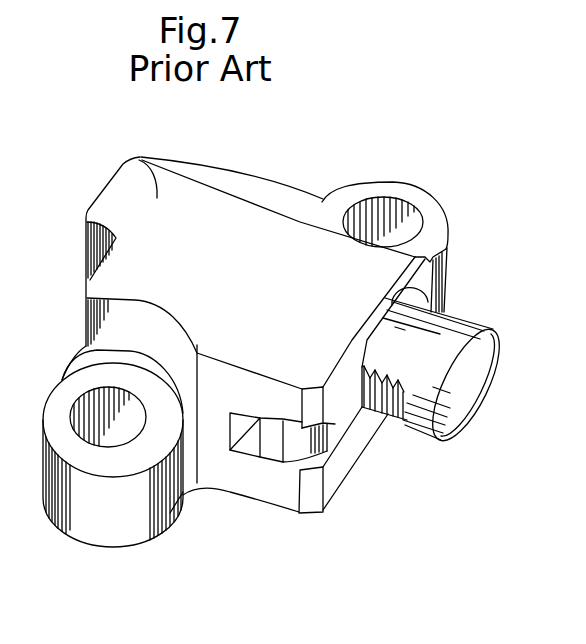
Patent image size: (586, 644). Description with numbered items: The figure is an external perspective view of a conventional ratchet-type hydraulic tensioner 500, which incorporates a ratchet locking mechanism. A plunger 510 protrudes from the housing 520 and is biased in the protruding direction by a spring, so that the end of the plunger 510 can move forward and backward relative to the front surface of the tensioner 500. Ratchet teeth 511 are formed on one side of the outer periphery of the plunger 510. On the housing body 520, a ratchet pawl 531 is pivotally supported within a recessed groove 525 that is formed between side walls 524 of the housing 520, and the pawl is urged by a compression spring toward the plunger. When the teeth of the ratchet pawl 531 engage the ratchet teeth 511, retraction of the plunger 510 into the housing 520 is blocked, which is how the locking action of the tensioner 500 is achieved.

The ratchet-type hydraulic tensioner 500 is at (298, 172).
The plunger 510 is at (435, 340).
The ratchet teeth 511 is at (390, 422).
The housing 520 is at (132, 158).
The side walls 524 is at (335, 415).
The recessed groove 525 is at (247, 448).
The ratchet pawl 531 is at (343, 413).